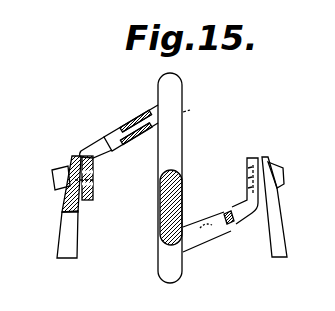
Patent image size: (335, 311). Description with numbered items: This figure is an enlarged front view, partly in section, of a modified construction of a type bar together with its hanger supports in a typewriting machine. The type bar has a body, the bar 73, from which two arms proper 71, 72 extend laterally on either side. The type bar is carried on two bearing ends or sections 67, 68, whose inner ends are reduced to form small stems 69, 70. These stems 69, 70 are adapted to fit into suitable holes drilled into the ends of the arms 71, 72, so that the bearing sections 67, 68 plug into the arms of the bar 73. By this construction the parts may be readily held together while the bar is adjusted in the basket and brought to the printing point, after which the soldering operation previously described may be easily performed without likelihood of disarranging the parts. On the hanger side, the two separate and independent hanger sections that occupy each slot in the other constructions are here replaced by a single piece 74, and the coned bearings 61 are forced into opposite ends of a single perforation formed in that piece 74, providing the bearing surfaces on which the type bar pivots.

The coned bearings 61 is at (55, 170).
The bearing end 67 is at (96, 143).
The bearing end 68 is at (243, 218).
The stem 69 is at (113, 142).
The stem 70 is at (227, 213).
The arm 71 is at (147, 119).
The arm 72 is at (196, 227).
The bar 73 is at (182, 184).
The single piece 74 is at (70, 246).